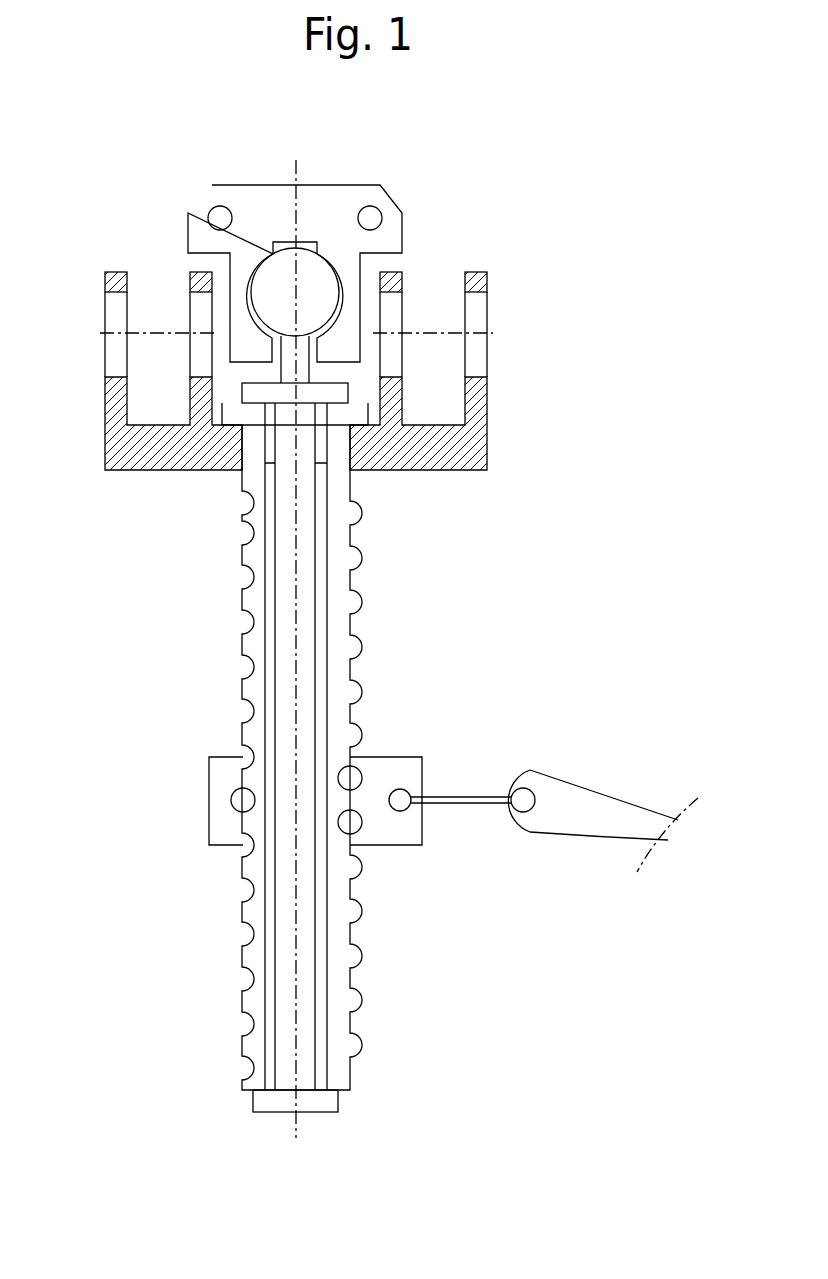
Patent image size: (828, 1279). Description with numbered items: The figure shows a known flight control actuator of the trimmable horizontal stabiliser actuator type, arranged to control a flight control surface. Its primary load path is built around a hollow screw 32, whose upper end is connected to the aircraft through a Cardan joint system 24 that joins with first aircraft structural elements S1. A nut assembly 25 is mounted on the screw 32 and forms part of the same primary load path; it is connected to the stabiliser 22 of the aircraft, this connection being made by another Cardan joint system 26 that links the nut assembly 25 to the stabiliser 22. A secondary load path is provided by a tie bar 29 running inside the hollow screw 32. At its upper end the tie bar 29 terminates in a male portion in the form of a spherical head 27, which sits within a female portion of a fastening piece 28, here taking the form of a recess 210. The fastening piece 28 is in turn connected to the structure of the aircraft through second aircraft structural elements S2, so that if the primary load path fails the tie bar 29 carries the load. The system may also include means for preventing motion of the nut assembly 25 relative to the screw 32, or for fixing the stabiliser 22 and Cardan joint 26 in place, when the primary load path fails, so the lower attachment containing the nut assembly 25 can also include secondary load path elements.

The stabiliser 22 is at (537, 770).
The Cardan joint system 24 is at (105, 408).
The nut assembly 25 is at (397, 757).
The Cardan joint system 26 is at (465, 797).
The spherical head 27 is at (268, 291).
The fastening piece 28 is at (362, 185).
The tie bar 29 is at (281, 642).
The hollow screw 32 is at (338, 642).
The recess 210 is at (270, 249).
The first aircraft structural elements S1 is at (148, 333).
The second aircraft structural elements S2 is at (385, 211).